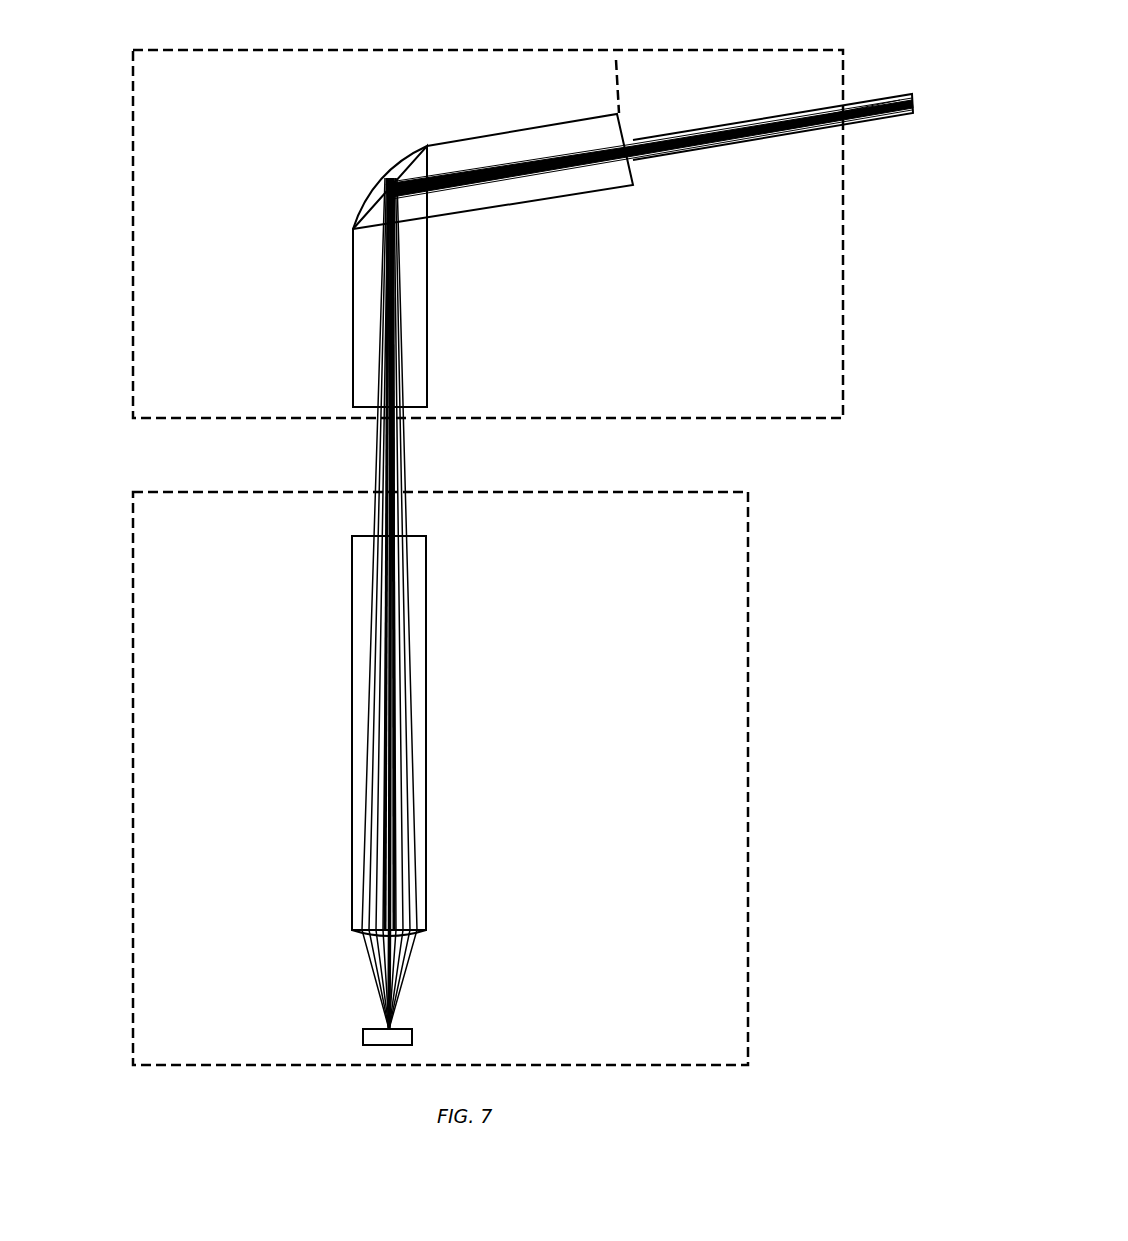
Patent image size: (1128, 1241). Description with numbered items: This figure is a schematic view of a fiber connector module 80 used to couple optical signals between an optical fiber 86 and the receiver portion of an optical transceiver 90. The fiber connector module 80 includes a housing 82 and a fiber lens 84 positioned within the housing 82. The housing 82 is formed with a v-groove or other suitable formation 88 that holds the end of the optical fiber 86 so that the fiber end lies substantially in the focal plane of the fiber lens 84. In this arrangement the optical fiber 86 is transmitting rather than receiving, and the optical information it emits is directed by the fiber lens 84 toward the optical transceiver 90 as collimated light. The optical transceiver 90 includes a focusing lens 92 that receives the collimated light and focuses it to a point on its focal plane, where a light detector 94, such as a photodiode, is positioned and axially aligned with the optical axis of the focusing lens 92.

The fiber connector module 80 is at (110, 226).
The housing 82 is at (723, 74).
The fiber lens 84 is at (378, 198).
The optical fiber 86 is at (866, 101).
The v-groove or other suitable formation 88 is at (620, 100).
The optical transceiver 90 is at (730, 790).
The focusing lens 92 is at (420, 942).
The light detector 94 is at (402, 1037).